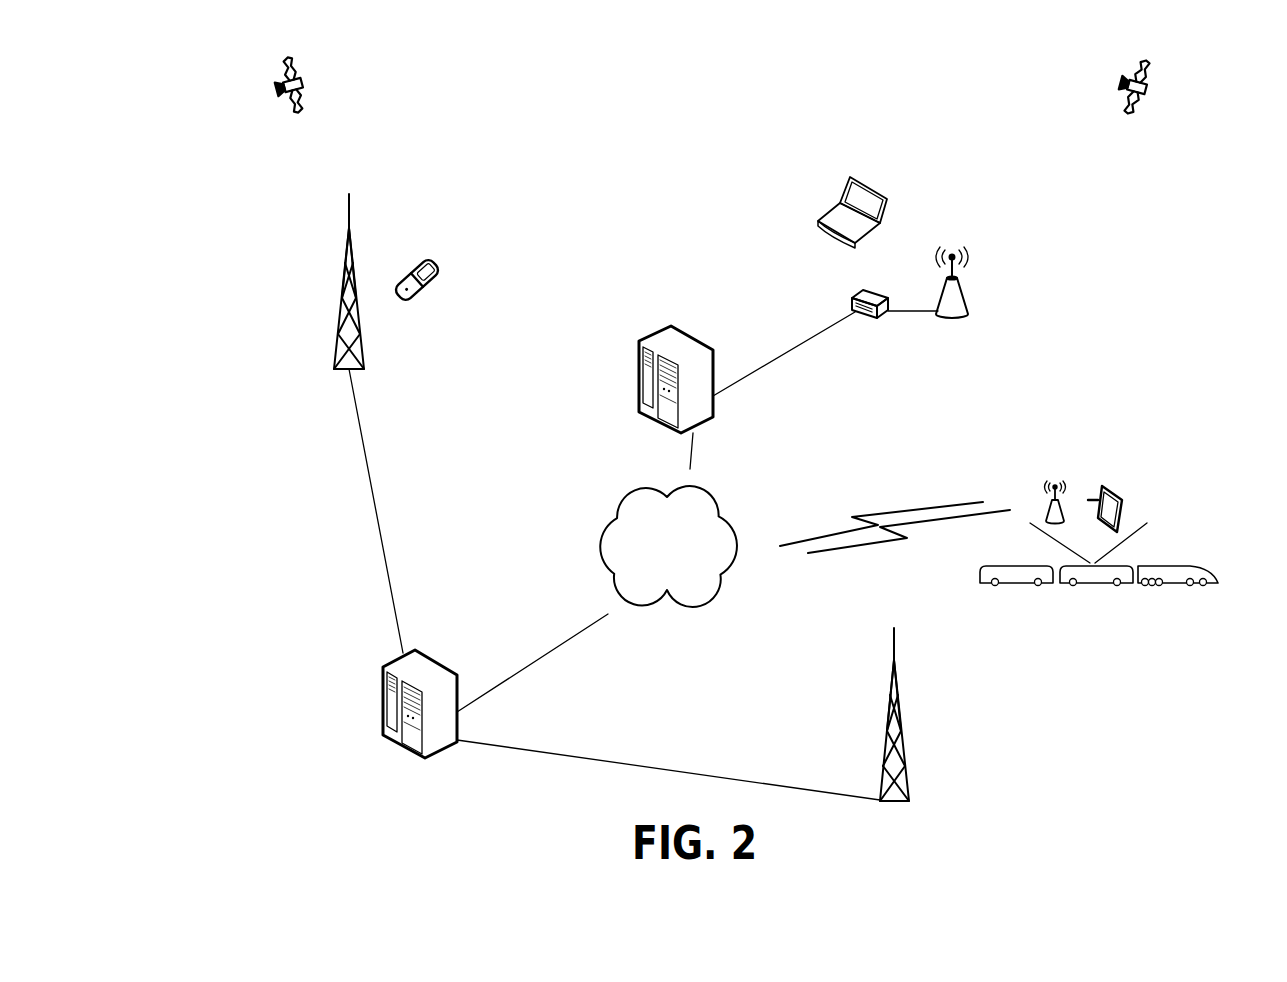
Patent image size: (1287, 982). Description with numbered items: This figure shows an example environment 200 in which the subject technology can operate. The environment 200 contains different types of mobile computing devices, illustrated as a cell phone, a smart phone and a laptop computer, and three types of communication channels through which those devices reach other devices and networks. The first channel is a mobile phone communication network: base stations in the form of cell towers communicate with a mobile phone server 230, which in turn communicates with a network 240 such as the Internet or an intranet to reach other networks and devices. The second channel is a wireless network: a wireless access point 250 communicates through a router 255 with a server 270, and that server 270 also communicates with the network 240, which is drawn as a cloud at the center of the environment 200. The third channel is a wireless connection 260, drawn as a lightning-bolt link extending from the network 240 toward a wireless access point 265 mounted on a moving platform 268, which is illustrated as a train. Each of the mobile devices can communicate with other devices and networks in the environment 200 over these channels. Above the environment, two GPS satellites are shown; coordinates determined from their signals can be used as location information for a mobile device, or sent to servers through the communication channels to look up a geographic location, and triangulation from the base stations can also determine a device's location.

The environment 200 is at (224, 162).
The mobile phone server 230 is at (383, 700).
The network 240 is at (577, 510).
The wireless access point 250 is at (960, 285).
The router 255 is at (852, 296).
The wireless connection 260 is at (902, 510).
The wireless access point on moving platform 265 is at (1063, 498).
The moving platform 268 is at (1155, 565).
The server 270 is at (638, 383).